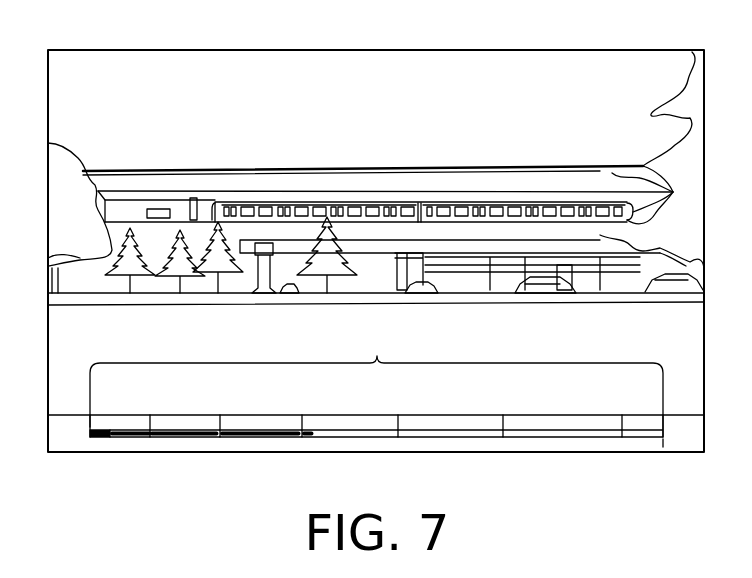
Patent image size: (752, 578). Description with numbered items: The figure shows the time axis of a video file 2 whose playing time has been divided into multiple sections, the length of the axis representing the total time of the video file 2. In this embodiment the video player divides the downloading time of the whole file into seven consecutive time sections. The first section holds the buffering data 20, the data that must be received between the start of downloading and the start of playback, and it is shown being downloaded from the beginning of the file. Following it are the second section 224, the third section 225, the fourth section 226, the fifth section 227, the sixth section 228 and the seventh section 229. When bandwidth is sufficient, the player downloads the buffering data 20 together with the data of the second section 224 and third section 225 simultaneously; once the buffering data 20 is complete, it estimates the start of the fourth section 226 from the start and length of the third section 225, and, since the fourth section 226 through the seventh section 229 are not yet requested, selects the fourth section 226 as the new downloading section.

The video file 2 is at (376, 384).
The buffering data 20 is at (150, 415).
The second section 224 is at (150, 415).
The third section 225 is at (220, 415).
The fourth section 226 is at (302, 415).
The fifth section 227 is at (398, 415).
The sixth section 228 is at (622, 415).
The seventh section 229 is at (663, 415).